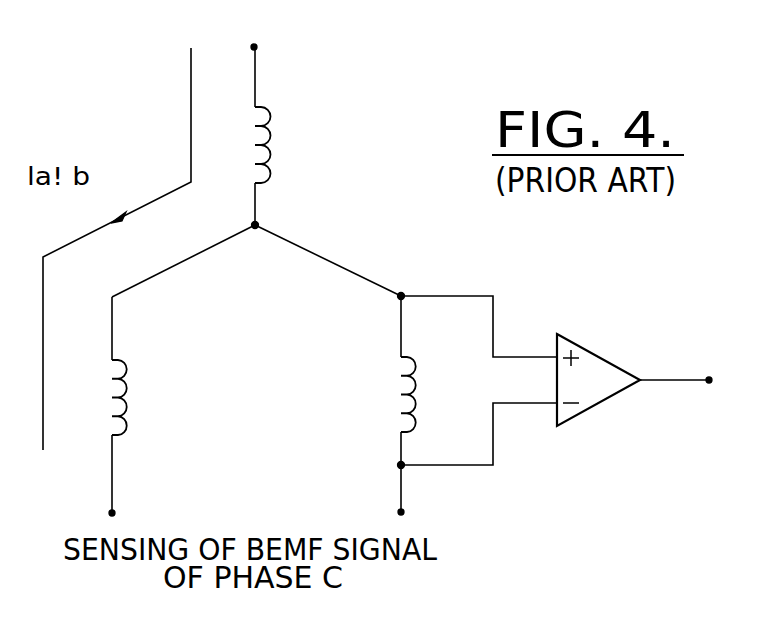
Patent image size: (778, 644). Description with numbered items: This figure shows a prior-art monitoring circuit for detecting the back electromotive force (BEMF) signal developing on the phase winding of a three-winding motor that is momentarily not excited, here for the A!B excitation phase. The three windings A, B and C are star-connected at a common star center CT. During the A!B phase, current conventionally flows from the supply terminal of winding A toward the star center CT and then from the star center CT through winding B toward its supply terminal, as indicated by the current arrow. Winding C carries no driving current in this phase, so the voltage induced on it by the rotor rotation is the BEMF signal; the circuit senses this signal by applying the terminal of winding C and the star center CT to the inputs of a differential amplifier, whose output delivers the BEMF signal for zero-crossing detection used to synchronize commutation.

The winding A is at (268, 130).
The winding B is at (121, 412).
The winding C is at (411, 411).
The star center CT is at (256, 250).
The back electromotive force signal BEMF is at (571, 380).